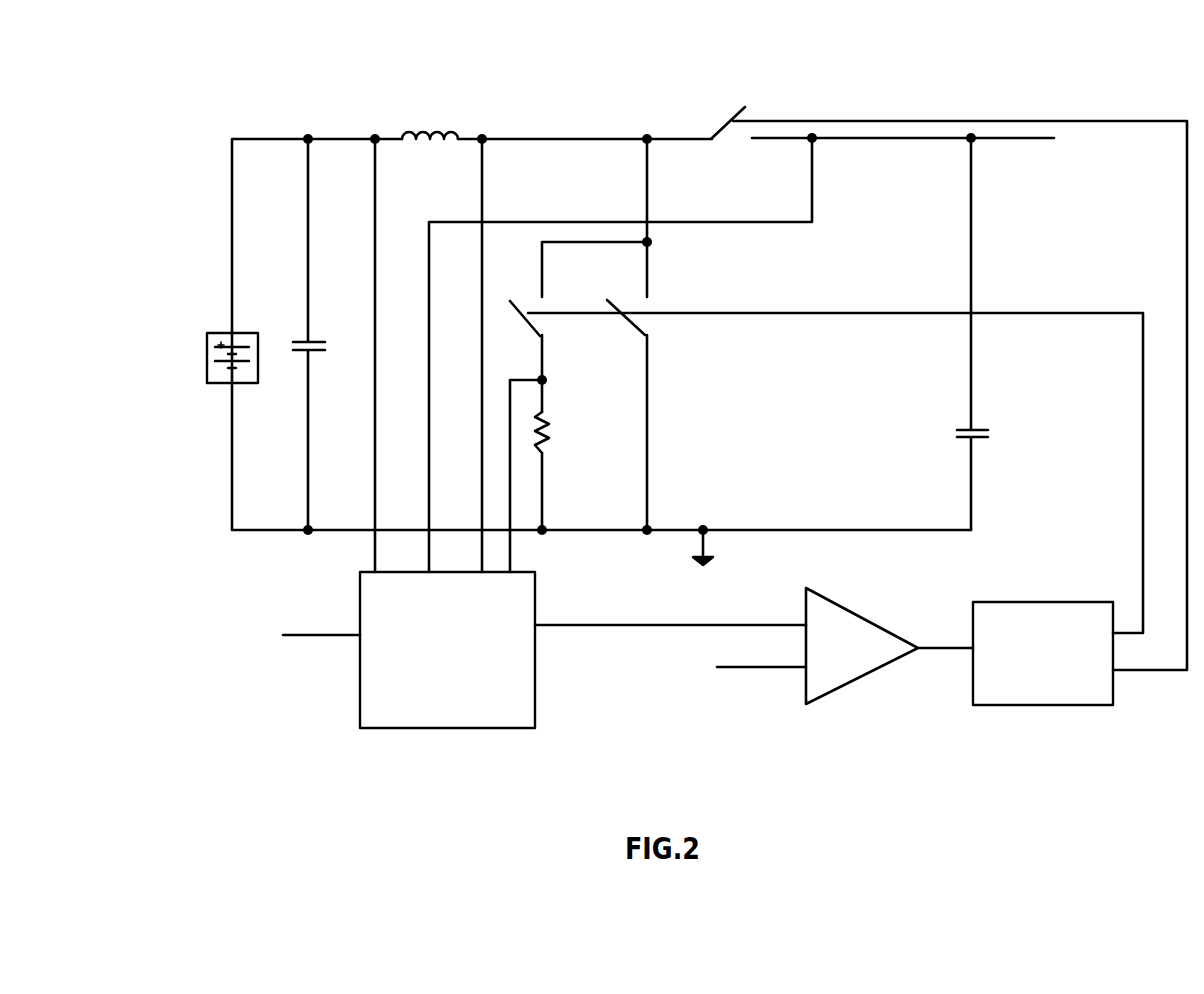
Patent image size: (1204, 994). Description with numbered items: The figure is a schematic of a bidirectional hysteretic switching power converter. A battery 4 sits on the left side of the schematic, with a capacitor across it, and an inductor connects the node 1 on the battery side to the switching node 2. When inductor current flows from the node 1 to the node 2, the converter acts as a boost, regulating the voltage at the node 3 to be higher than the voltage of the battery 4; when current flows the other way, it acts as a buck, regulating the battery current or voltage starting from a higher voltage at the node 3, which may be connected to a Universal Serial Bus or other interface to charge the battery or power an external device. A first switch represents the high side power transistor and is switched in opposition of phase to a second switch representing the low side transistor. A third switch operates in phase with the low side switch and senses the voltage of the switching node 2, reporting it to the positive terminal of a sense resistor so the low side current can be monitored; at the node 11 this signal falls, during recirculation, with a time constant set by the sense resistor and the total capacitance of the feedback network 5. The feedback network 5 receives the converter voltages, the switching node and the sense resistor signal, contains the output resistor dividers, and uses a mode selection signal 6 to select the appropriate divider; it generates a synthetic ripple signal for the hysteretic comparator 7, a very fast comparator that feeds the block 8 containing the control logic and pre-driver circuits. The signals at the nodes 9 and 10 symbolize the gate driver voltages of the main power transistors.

The node 1 is at (343, 137).
The switching node 2 is at (515, 137).
The node 3 is at (897, 130).
The battery 4 is at (230, 305).
The feedback network 5 is at (415, 728).
The mode selection signal 6 is at (318, 635).
The hysteretic comparator 7 is at (842, 688).
The block including control logic and pre-driver circuits 8 is at (1043, 705).
The node 9 is at (1187, 219).
The node 10 is at (1143, 420).
The node 11 is at (548, 385).